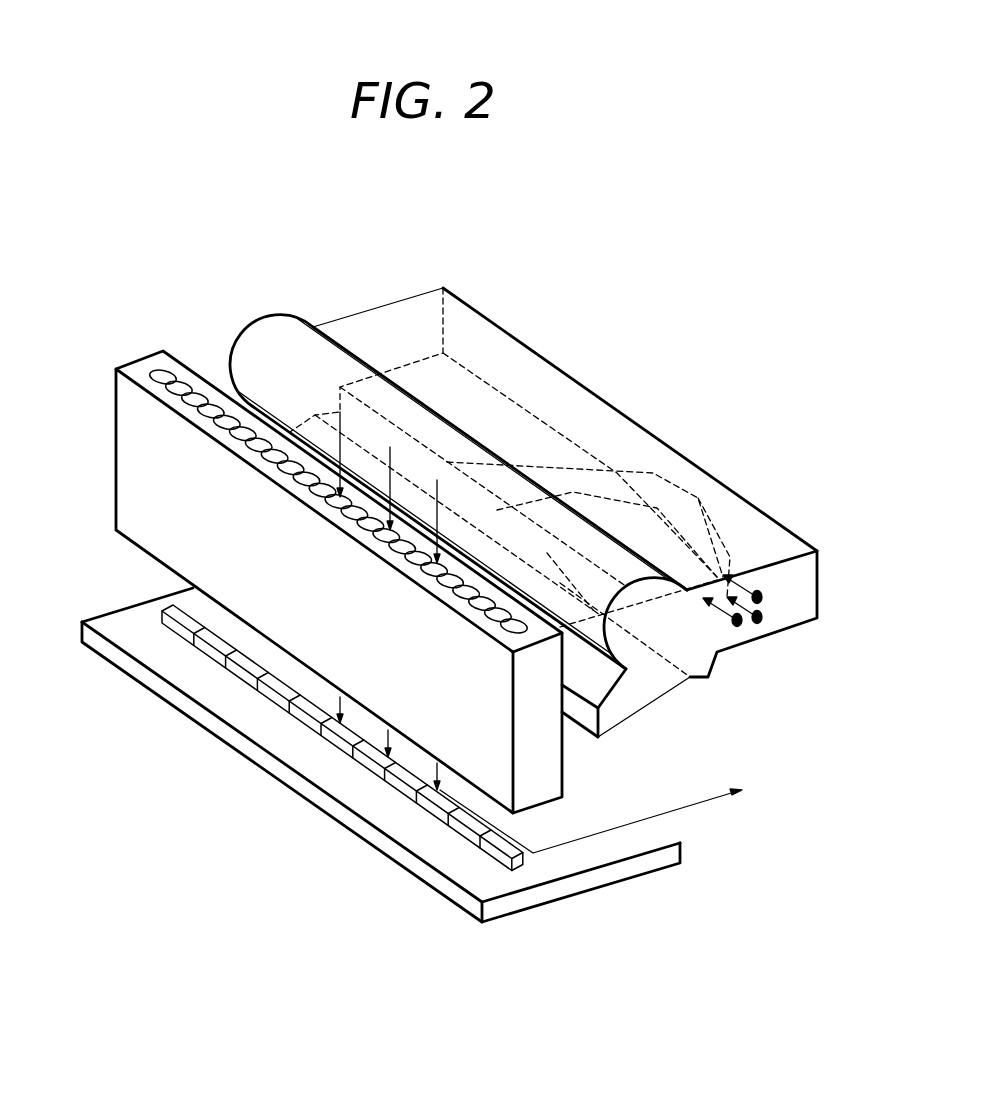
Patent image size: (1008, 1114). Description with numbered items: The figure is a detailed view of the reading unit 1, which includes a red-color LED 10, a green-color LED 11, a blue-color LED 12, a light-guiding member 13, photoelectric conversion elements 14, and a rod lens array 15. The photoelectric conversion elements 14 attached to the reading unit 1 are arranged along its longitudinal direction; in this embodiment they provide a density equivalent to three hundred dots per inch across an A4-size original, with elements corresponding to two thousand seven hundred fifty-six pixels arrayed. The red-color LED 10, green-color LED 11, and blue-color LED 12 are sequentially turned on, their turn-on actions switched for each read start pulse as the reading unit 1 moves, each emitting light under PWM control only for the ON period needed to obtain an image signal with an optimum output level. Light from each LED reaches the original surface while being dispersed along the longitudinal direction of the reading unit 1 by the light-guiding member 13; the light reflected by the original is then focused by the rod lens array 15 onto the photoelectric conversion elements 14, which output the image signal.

The reading unit 1 is at (500, 219).
The red-color LED 10 is at (760, 588).
The green-color LED 11 is at (765, 615).
The blue-color LED 12 is at (737, 627).
The light-guiding member 13 is at (643, 428).
The photoelectric conversion elements 14 is at (265, 700).
The rod lens array 15 is at (115, 476).